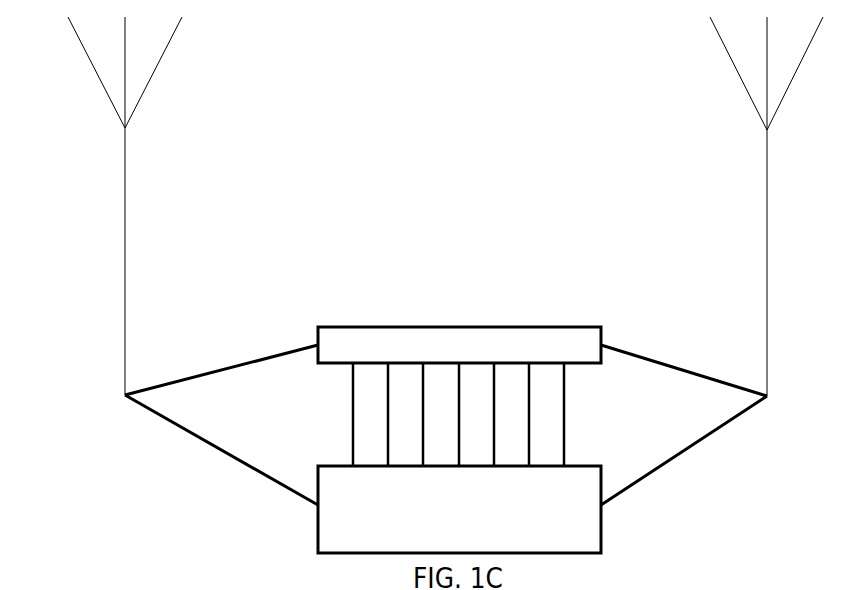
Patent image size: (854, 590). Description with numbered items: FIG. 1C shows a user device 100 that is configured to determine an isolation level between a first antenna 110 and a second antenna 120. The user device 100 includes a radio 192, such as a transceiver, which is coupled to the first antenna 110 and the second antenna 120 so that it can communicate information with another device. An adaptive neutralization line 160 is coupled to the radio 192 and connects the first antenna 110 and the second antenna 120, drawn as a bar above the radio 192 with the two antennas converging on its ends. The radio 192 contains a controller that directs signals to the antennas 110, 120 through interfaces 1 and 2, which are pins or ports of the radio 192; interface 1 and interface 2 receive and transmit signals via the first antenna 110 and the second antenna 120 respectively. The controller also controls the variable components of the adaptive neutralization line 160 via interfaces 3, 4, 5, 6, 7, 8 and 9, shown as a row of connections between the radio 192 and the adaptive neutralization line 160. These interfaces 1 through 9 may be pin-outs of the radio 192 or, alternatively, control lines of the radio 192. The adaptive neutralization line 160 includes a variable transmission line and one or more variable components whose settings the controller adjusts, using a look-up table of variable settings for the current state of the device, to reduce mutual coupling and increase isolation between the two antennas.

The user device 100 is at (419, 44).
The first antenna 110 is at (79, 39).
The second antenna 120 is at (721, 40).
The adaptive neutralization line 160 is at (459, 396).
The radio 192 is at (459, 509).
The interface 1 is at (335, 510).
The interface 2 is at (581, 510).
The interface 3 is at (353, 483).
The interface 4 is at (388, 483).
The interface 5 is at (423, 483).
The interface 6 is at (459, 483).
The interface 7 is at (494, 483).
The interface 8 is at (529, 483).
The interface 9 is at (564, 483).